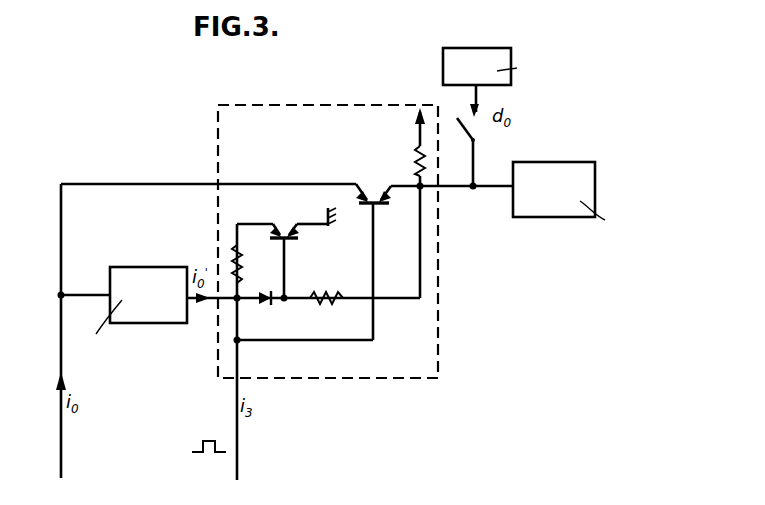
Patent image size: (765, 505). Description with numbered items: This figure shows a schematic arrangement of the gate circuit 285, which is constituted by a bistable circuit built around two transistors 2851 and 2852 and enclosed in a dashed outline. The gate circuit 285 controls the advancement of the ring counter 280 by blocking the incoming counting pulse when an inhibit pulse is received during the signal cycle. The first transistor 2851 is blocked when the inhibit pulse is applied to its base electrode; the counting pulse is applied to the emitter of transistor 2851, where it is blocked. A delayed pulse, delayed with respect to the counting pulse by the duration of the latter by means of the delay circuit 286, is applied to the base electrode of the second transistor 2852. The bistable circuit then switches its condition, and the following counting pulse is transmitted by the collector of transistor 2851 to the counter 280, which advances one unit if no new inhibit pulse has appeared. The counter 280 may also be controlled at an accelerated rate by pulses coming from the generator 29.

The generator 29 is at (490, 57).
The ring counter 280 is at (550, 170).
The gate circuit 285 is at (436, 346).
The transistor 2851 is at (375, 196).
The transistor 2852 is at (281, 232).
The delay circuit 286 is at (146, 277).